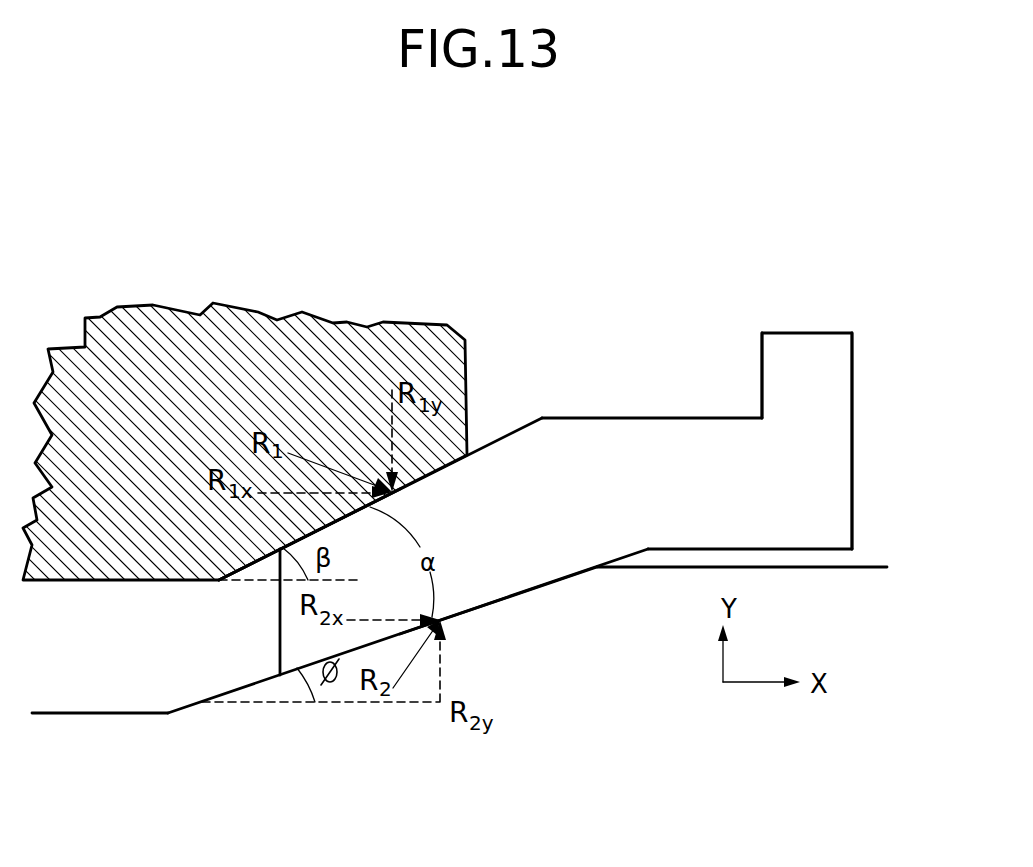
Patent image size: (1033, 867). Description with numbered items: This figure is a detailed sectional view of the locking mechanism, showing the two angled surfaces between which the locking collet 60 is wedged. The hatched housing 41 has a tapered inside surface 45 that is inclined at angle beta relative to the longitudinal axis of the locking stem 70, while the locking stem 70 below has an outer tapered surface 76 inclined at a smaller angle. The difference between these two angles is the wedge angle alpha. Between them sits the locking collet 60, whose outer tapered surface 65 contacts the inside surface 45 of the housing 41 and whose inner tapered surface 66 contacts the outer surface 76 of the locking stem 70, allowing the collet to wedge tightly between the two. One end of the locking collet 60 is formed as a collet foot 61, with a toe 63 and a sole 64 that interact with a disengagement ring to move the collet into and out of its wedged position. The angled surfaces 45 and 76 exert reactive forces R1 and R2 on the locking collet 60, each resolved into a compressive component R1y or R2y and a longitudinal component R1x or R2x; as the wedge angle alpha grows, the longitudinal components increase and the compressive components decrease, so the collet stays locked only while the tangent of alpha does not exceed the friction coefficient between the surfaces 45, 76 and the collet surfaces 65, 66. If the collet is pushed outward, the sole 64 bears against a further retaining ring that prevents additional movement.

The housing 41 is at (181, 375).
The inside surface of housing 45 is at (337, 520).
The locking collet 60 is at (513, 532).
The collet foot 61 is at (823, 408).
The toe 63 is at (758, 377).
The sole 64 is at (853, 388).
The outer tapered surface 65 is at (488, 445).
The inner tapered surface 66 is at (550, 582).
The locking stem 70 is at (568, 698).
The outer surface of locking stem 76 is at (497, 603).